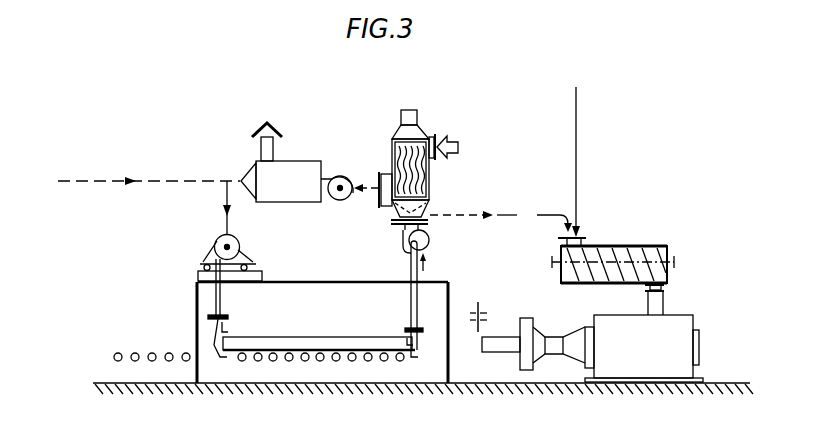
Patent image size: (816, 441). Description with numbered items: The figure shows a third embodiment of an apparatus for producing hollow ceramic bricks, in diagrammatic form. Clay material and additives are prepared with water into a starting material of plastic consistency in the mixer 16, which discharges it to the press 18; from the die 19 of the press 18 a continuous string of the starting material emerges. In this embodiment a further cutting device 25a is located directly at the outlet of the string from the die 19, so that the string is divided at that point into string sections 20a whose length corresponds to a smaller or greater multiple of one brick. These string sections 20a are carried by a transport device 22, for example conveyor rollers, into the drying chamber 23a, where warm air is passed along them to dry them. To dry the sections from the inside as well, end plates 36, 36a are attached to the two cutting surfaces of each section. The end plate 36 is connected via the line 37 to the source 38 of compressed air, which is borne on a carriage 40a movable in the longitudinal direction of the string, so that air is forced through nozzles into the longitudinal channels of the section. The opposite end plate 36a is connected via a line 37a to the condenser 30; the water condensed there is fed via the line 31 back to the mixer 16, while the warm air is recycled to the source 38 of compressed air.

The mixer 16 is at (647, 252).
The press 18 is at (679, 327).
The die 19 is at (531, 322).
The string sections 20a is at (323, 341).
The transport device 22 is at (367, 361).
The drying chamber 23a is at (325, 285).
The further cutting device 25a is at (482, 311).
The condenser 30 is at (395, 156).
The line 31 is at (506, 213).
The end plate 36 is at (216, 346).
The end plate 36a is at (420, 346).
The line 37 is at (218, 293).
The line 37a is at (426, 281).
The source of compressed air 38 is at (222, 246).
The carriage 40a is at (203, 265).